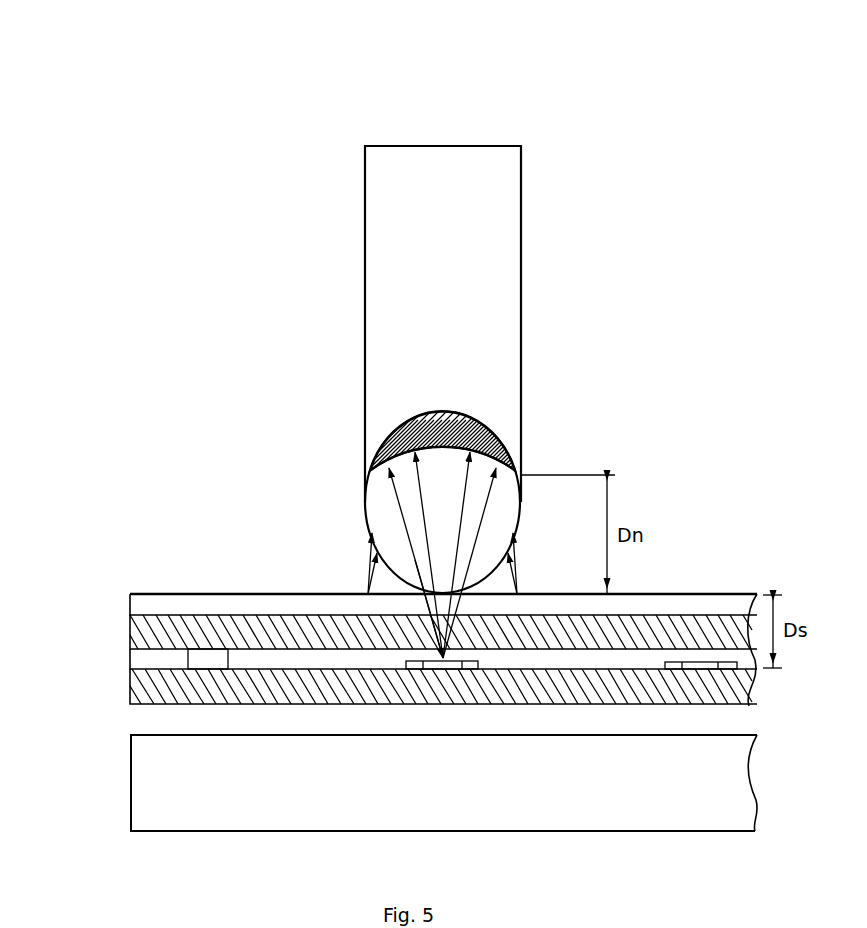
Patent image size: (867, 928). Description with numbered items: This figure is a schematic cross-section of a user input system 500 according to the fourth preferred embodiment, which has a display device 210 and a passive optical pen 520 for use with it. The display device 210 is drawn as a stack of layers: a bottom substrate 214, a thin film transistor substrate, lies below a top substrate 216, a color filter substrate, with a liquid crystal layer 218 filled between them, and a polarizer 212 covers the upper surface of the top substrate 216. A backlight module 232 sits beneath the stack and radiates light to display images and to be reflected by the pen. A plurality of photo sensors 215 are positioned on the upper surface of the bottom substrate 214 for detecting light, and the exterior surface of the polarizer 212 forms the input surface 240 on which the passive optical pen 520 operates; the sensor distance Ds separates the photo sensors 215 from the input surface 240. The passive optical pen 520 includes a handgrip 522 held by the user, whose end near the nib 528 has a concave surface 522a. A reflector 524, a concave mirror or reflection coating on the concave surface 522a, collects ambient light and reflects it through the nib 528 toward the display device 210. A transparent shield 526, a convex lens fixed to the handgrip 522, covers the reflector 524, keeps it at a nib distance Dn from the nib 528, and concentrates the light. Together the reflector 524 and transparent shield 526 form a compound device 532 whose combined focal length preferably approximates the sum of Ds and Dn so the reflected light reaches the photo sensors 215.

The user input system 500 is at (567, 53).
The passive optical pen 520 is at (373, 125).
The handgrip 522 is at (460, 321).
The concave surface 522a is at (390, 432).
The reflector 524 is at (370, 468).
The transparent shield 526 is at (375, 498).
The nib 528 is at (483, 590).
The compound device 532 is at (420, 455).
The input surface 240 is at (187, 593).
The display device 210 is at (80, 795).
The polarizer 212 is at (142, 604).
The top substrate 216 is at (140, 636).
The liquid crystal layer 218 is at (253, 660).
The bottom substrate 214 is at (142, 691).
The photo sensors 215 is at (440, 665).
The backlight module 232 is at (142, 777).